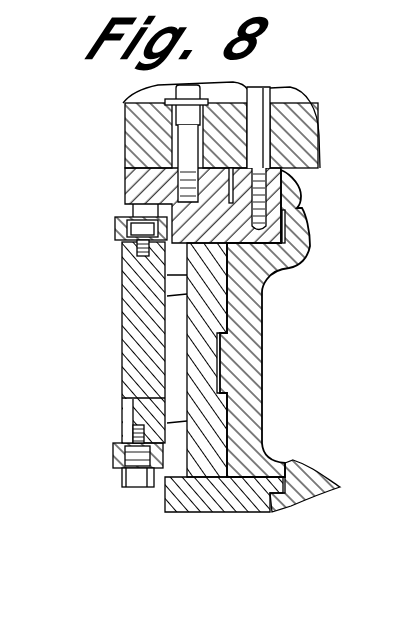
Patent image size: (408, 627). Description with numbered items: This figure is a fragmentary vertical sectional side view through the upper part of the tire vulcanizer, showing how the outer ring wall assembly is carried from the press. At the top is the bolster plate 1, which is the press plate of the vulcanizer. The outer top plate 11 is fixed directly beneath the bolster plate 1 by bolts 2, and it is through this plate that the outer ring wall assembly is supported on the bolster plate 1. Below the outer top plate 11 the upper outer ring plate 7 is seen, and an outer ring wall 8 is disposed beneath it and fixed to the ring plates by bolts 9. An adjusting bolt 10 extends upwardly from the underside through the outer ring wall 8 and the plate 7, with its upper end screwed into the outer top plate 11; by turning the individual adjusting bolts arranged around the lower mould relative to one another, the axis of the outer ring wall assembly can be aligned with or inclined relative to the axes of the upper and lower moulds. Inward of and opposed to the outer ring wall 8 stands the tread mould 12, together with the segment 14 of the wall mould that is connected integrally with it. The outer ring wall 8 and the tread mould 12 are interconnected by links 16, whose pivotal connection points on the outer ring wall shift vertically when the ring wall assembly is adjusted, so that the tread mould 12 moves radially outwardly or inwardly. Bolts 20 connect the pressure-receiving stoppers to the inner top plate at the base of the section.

The bolster plate 1 is at (125, 124).
The bolts 2 is at (186, 148).
The outer top plate 11 is at (140, 189).
The upper outer ring plate 7 is at (113, 231).
The bolts 9 is at (124, 247).
The outer ring wall 8 is at (122, 343).
The links 16 is at (125, 399).
The segment of wall mould 14 is at (232, 302).
The tread mould 12 is at (262, 366).
The adjusting bolt 10 is at (122, 481).
The bolts 20 is at (165, 502).